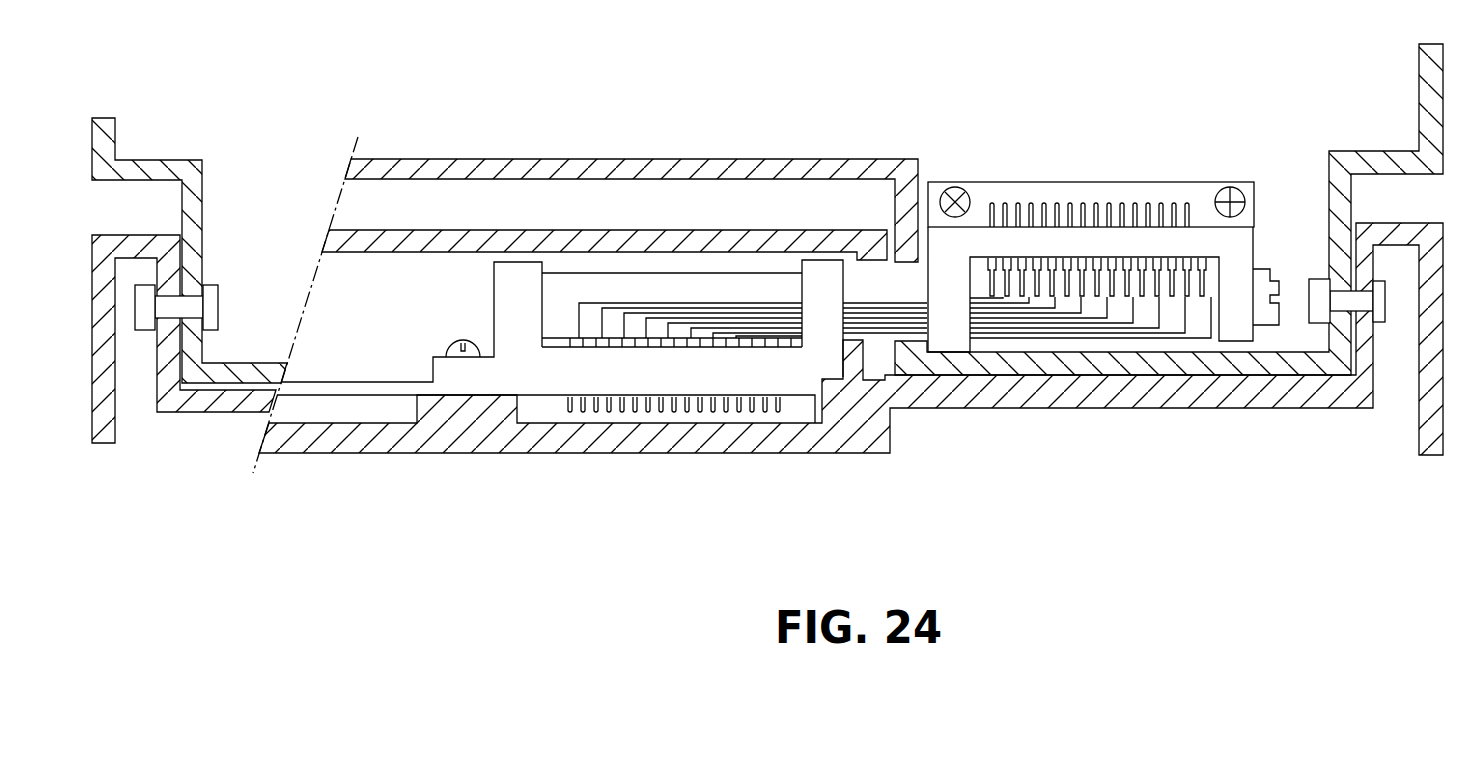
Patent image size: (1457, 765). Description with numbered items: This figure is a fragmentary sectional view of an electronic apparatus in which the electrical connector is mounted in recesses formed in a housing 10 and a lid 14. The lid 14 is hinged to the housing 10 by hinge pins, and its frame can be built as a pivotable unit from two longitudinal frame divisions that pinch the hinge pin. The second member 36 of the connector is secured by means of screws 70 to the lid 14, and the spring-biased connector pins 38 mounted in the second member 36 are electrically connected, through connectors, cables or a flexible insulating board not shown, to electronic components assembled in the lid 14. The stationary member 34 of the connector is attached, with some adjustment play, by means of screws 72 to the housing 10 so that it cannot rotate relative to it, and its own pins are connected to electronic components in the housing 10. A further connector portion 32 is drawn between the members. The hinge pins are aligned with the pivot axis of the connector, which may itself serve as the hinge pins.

The housing 10 is at (458, 442).
The lid 14 is at (1358, 150).
The connector block 32 is at (632, 283).
The stationary member 34 is at (613, 367).
The second member 36 is at (1022, 244).
The spring-biased connector pins 38 is at (1112, 208).
The screws 70 is at (965, 187).
The screws 72 is at (455, 345).